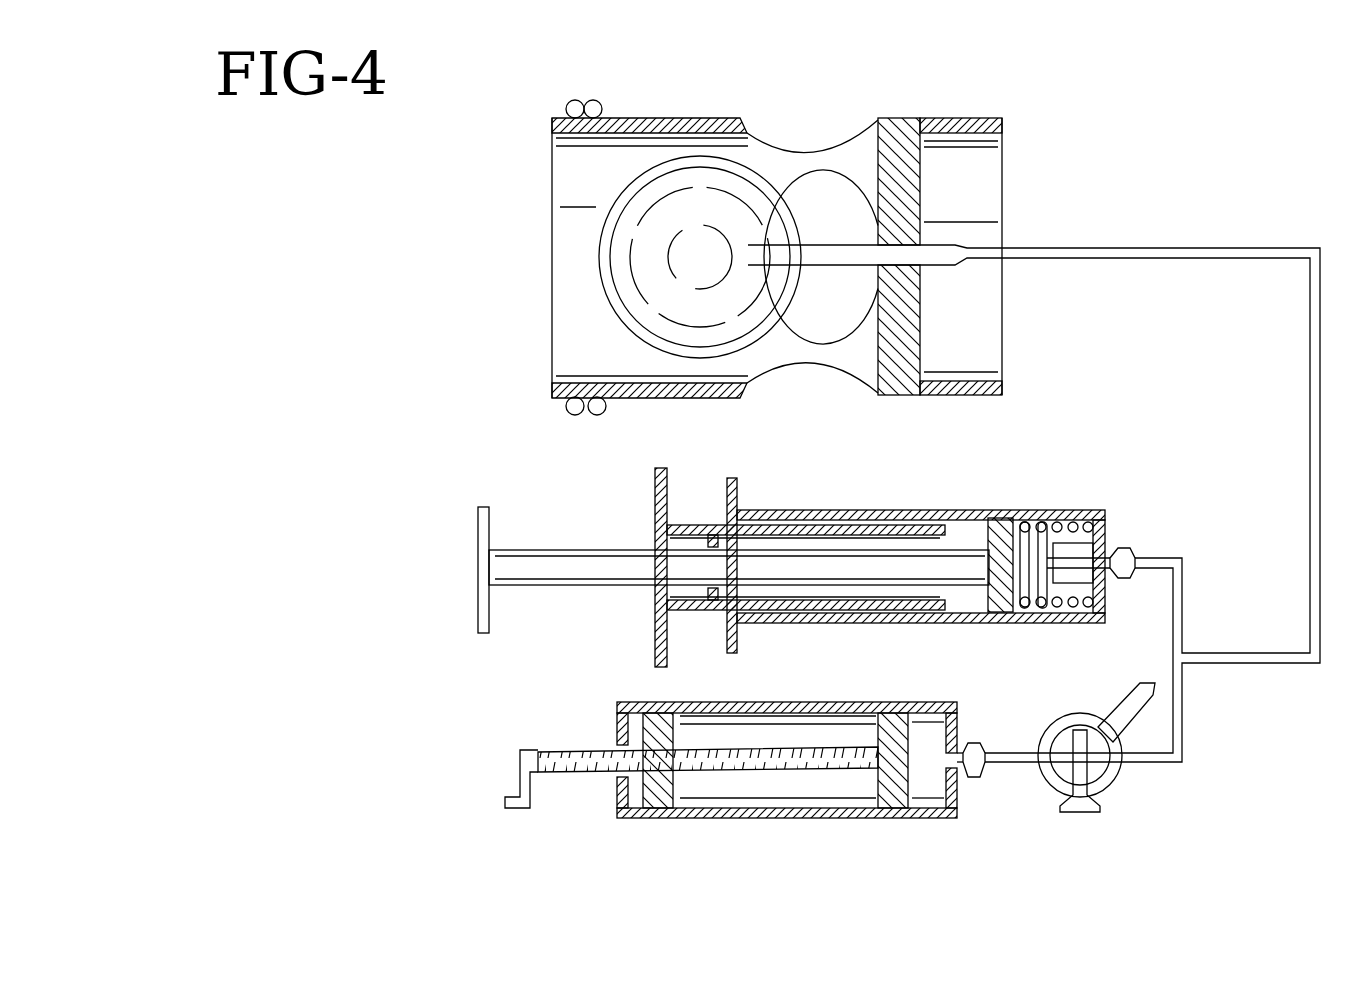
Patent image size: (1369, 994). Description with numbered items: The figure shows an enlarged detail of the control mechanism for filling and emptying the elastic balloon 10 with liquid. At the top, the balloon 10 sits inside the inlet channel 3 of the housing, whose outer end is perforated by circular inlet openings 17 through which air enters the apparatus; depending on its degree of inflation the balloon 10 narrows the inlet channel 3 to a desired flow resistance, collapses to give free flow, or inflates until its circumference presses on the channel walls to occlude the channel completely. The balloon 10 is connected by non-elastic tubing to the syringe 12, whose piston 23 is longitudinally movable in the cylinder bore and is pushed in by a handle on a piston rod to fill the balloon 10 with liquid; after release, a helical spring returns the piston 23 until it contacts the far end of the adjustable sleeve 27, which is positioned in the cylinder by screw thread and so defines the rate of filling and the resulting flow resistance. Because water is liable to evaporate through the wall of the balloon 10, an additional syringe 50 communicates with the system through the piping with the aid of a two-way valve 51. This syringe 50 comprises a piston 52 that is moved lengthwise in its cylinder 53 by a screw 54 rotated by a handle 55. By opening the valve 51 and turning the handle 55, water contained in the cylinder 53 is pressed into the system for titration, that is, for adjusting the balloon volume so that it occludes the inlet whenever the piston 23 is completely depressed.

The inlet channel 3 is at (597, 157).
The elastic balloon 10 is at (622, 290).
The syringe 12 is at (790, 505).
The circular inlet openings 17 is at (810, 185).
The piston 23 is at (1000, 525).
The sleeve 27 is at (710, 520).
The additional syringe 50 is at (813, 808).
The two-way valve 51 is at (1132, 792).
The piston 52 is at (898, 790).
The cylinder 53 is at (745, 818).
The screw 54 is at (780, 760).
The handle 55 is at (540, 786).